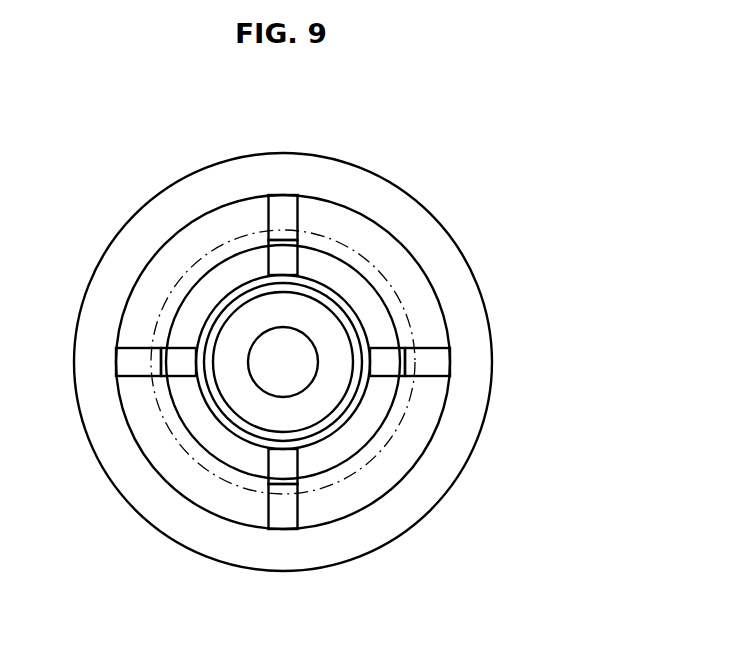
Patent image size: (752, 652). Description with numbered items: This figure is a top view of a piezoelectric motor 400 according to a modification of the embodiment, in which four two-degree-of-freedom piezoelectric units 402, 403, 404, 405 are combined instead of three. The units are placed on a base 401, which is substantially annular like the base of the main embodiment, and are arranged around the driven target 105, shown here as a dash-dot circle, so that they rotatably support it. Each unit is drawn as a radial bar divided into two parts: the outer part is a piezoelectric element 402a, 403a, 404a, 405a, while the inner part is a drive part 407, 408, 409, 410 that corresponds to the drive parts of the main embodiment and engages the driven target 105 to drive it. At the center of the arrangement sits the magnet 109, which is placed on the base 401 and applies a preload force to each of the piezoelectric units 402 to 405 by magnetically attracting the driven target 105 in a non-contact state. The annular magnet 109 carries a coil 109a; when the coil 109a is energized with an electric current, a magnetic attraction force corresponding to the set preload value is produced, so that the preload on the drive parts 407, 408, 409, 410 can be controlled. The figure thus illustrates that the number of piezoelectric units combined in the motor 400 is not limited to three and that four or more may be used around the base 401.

The piezoelectric motor 400 is at (578, 185).
The base 401 is at (492, 355).
The two-degree-of-freedom piezoelectric unit 402 is at (438, 387).
The piezoelectric element 402a is at (428, 348).
The two-degree-of-freedom piezoelectric unit 403 is at (310, 211).
The piezoelectric element 403a is at (268, 212).
The two-degree-of-freedom piezoelectric unit 404 is at (130, 337).
The piezoelectric element 404a is at (137, 373).
The two-degree-of-freedom piezoelectric unit 405 is at (259, 512).
The piezoelectric element 405a is at (295, 508).
The drive part 407 is at (392, 347).
The drive part 408 is at (268, 257).
The drive part 409 is at (168, 380).
The drive part 410 is at (293, 465).
The driven target 105 is at (343, 243).
The magnet 109 is at (295, 373).
The coil 109a is at (307, 414).